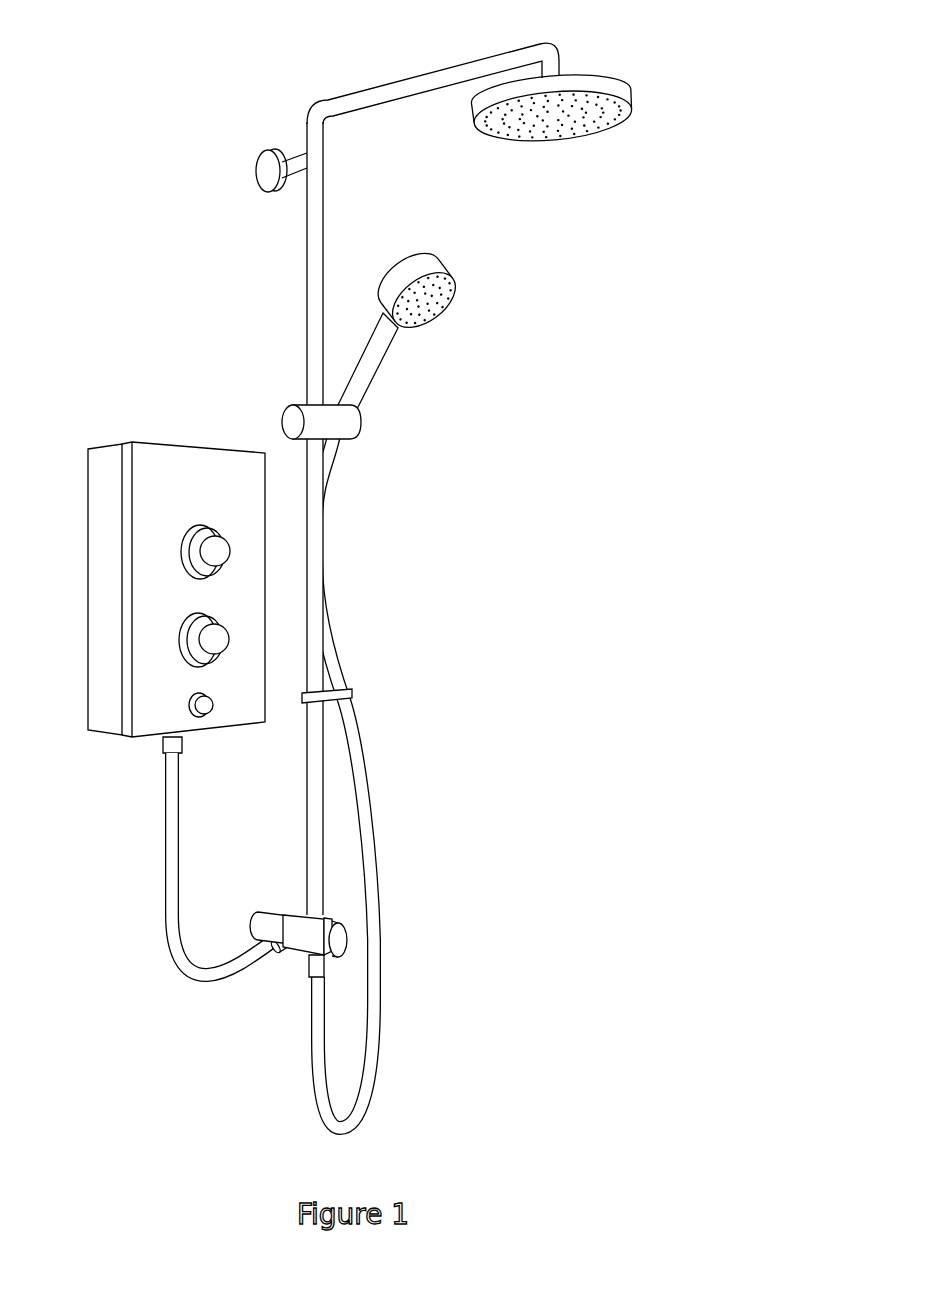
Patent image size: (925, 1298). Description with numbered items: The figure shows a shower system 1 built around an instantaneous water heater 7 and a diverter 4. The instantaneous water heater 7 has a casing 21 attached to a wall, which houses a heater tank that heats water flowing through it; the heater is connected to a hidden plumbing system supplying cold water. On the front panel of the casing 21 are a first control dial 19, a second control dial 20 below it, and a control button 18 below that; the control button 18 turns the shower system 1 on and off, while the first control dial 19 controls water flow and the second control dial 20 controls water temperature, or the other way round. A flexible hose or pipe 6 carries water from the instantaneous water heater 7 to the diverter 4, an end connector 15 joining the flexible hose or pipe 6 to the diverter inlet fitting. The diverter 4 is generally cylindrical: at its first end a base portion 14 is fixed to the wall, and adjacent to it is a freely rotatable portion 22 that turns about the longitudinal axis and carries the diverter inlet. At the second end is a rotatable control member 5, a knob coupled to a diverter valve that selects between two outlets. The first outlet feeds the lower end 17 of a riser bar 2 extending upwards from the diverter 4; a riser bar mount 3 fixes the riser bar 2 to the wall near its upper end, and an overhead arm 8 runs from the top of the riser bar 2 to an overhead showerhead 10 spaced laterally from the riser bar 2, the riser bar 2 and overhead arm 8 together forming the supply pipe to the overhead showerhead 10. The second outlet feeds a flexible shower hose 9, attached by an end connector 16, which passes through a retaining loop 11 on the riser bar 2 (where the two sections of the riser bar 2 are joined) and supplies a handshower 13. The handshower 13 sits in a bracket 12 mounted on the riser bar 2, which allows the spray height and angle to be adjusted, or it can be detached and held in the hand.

The shower system 1 is at (235, 219).
The riser bar 2 is at (313, 277).
The riser bar mount 3 is at (260, 165).
The diverter 4 is at (303, 944).
The control member 5 is at (347, 942).
The flexible hose or pipe 6 is at (172, 925).
The instantaneous water heater 7 is at (145, 590).
The overhead arm 8 is at (417, 85).
The shower hose 9 is at (370, 800).
The overhead showerhead 10 is at (630, 108).
The retaining loop 11 is at (354, 693).
The bracket 12 is at (358, 432).
The handshower 13 is at (454, 296).
The base portion 14 is at (263, 920).
The end connector 15 is at (282, 942).
The end connector 16 is at (314, 965).
The lower end 17 is at (326, 922).
The control button 18 is at (195, 701).
The first control dial 19 is at (220, 546).
The second control dial 20 is at (203, 640).
The casing 21 is at (110, 557).
The freely rotatable portion 22 is at (293, 918).